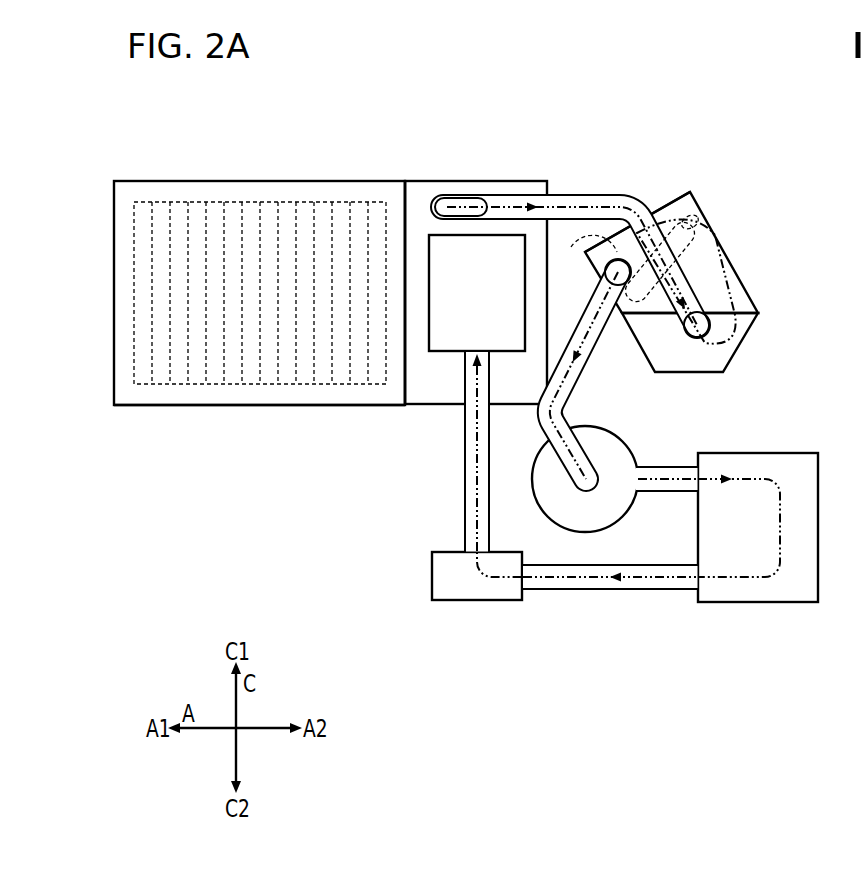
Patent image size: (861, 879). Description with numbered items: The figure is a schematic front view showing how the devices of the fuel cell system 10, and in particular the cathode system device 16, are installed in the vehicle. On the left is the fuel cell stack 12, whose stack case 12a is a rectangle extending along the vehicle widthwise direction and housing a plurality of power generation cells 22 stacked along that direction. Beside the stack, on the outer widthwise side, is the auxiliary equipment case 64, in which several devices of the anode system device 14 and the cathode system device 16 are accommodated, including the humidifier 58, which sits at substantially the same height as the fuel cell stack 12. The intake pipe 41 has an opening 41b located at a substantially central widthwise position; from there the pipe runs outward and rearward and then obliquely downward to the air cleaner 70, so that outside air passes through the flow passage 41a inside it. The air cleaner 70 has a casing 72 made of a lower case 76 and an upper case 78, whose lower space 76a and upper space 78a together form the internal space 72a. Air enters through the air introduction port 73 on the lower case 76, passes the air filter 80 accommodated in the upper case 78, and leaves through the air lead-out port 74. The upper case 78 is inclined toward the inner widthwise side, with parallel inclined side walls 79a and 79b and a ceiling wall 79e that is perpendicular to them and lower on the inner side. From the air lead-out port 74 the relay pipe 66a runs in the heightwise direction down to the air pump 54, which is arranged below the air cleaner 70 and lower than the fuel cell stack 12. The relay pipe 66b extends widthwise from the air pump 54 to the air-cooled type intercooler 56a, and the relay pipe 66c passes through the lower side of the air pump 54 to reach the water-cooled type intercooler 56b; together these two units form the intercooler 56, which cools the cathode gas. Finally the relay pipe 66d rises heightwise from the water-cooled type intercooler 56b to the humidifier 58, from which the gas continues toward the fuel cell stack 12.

The fuel cell system 10 is at (391, 84).
The fuel cell stack 12 is at (259, 283).
The stack case 12a is at (271, 407).
The anode system device 14 is at (418, 340).
The cathode system device 16 is at (571, 160).
The power generation cells 22 is at (218, 211).
The intake pipe 41 is at (564, 216).
The flow passage 41a is at (631, 216).
The opening 41b is at (453, 206).
The air pump 54 is at (538, 507).
The intercooler 56 is at (625, 553).
The air-cooled type intercooler 56a is at (730, 603).
The water-cooled type intercooler 56b is at (467, 602).
The humidifier 58 is at (433, 253).
The auxiliary equipment case 64 is at (471, 299).
The relay pipe 66a is at (580, 378).
The relay pipe 66b is at (663, 494).
The relay pipe 66c is at (612, 591).
The relay pipe 66d is at (463, 490).
The air cleaner 70 is at (718, 287).
The casing 72 is at (718, 307).
The internal space 72a is at (717, 307).
The air introduction port 73 is at (690, 338).
The air lead-out port 74 is at (598, 232).
The lower case 76 is at (717, 367).
The lower space 76a is at (703, 358).
The upper case 78 is at (717, 256).
The upper space 78a is at (708, 278).
The side wall 79a is at (710, 223).
The side wall 79b is at (635, 347).
The ceiling wall 79e is at (665, 203).
The air filter 80 is at (697, 212).